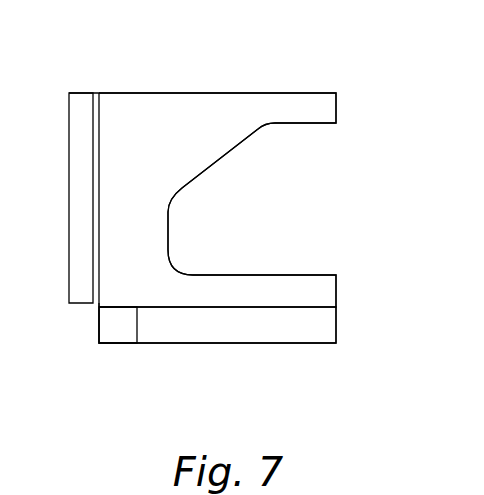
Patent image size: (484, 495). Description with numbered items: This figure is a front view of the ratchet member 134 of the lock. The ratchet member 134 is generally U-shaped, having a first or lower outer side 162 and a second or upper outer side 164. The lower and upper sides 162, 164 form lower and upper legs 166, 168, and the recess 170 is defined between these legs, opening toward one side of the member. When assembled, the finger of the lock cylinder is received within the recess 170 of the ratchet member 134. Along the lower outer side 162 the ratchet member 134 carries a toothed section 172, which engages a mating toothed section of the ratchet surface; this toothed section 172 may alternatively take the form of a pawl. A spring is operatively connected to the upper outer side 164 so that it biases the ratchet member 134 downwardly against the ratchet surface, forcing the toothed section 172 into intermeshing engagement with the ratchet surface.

The ratchet member 134 is at (406, 139).
The lower outer side 162 is at (137, 307).
The upper outer side 164 is at (178, 93).
The lower leg 166 is at (263, 293).
The upper leg 168 is at (252, 113).
The recess 170 is at (256, 202).
The toothed section 172 is at (300, 363).